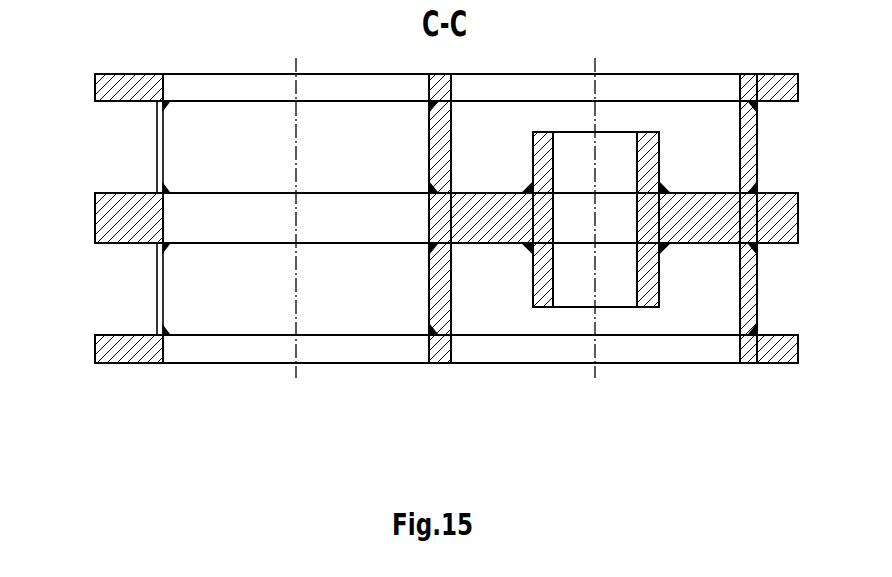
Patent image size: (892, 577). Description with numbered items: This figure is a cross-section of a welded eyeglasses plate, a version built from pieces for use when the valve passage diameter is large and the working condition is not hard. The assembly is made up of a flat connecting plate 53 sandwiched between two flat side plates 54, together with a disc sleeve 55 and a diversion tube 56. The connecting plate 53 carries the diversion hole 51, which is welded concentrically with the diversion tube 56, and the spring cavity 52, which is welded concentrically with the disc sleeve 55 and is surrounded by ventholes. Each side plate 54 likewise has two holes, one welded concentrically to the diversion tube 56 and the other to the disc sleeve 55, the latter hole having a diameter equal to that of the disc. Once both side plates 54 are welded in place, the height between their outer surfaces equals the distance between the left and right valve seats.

The diversion hole 51 is at (205, 117).
The spring cavity 52 is at (543, 310).
The connecting plate 53 is at (693, 217).
The side plate 54 is at (90, 335).
The disc sleeve 55 is at (747, 157).
The diversion tube 56 is at (430, 317).